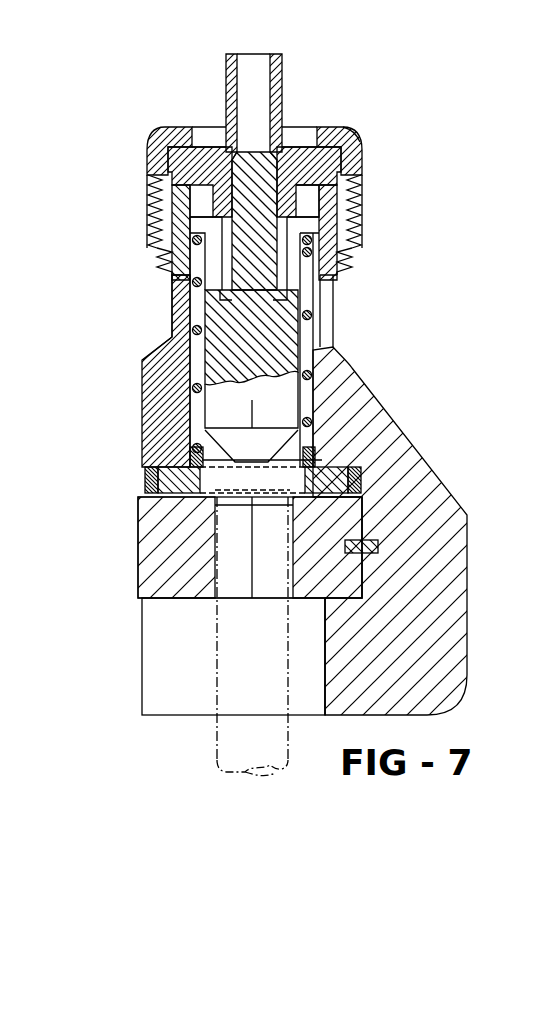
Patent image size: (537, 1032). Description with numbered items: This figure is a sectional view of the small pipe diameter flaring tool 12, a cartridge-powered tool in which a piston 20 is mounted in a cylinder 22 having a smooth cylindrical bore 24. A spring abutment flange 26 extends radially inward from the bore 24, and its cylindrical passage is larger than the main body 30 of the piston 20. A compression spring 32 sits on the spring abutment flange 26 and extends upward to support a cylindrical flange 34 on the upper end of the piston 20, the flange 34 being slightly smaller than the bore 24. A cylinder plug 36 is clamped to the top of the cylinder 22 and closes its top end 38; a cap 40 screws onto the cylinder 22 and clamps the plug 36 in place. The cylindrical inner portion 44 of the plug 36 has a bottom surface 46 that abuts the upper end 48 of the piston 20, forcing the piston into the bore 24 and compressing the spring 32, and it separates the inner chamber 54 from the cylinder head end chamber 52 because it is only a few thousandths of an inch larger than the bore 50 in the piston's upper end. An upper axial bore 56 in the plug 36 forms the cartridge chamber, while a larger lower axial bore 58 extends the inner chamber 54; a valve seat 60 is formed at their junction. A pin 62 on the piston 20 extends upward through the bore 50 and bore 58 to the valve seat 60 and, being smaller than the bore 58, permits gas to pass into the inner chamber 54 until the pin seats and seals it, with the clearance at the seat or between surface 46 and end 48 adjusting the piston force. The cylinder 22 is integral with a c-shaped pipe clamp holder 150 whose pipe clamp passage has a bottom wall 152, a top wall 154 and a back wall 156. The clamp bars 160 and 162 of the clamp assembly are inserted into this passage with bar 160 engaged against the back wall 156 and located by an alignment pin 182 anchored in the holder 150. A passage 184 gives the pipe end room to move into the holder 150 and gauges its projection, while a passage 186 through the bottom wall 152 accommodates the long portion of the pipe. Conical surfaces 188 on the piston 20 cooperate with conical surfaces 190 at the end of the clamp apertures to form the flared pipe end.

The small pipe diameter flaring tool 12 is at (458, 350).
The piston 20 is at (175, 375).
The cylinder 22 is at (165, 332).
The cylindrical bore 24 is at (312, 292).
The spring abutment flange 26 is at (200, 448).
The main body 30 is at (205, 400).
The compression spring 32 is at (305, 380).
The cylindrical flange 34 is at (312, 230).
The cylinder plug 36 is at (305, 170).
The top end 38 is at (158, 172).
The cap 40 is at (147, 176).
The cylindrical inner portion 44 is at (322, 200).
The bottom surface 46 is at (148, 233).
The upper end 48 is at (178, 215).
The bore 50 is at (305, 265).
The cylinder head end chamber 52 is at (193, 208).
The inner chamber 54 is at (205, 310).
The upper axial bore 56 is at (238, 112).
The lower axial bore 58 is at (340, 145).
The valve seat 60 is at (268, 150).
The pin 62 is at (175, 280).
The pipe clamp holder 150 is at (143, 430).
The bottom wall 152 is at (145, 585).
The top wall 154 is at (150, 510).
The back wall 156 is at (363, 495).
The clamp bar 160 is at (365, 625).
The clamp bar 162 is at (140, 548).
The alignment pin 182 is at (378, 550).
The passage 184 is at (148, 475).
The passage 186 is at (148, 680).
The conical surfaces 188 is at (322, 440).
The conical surfaces 190 is at (232, 503).